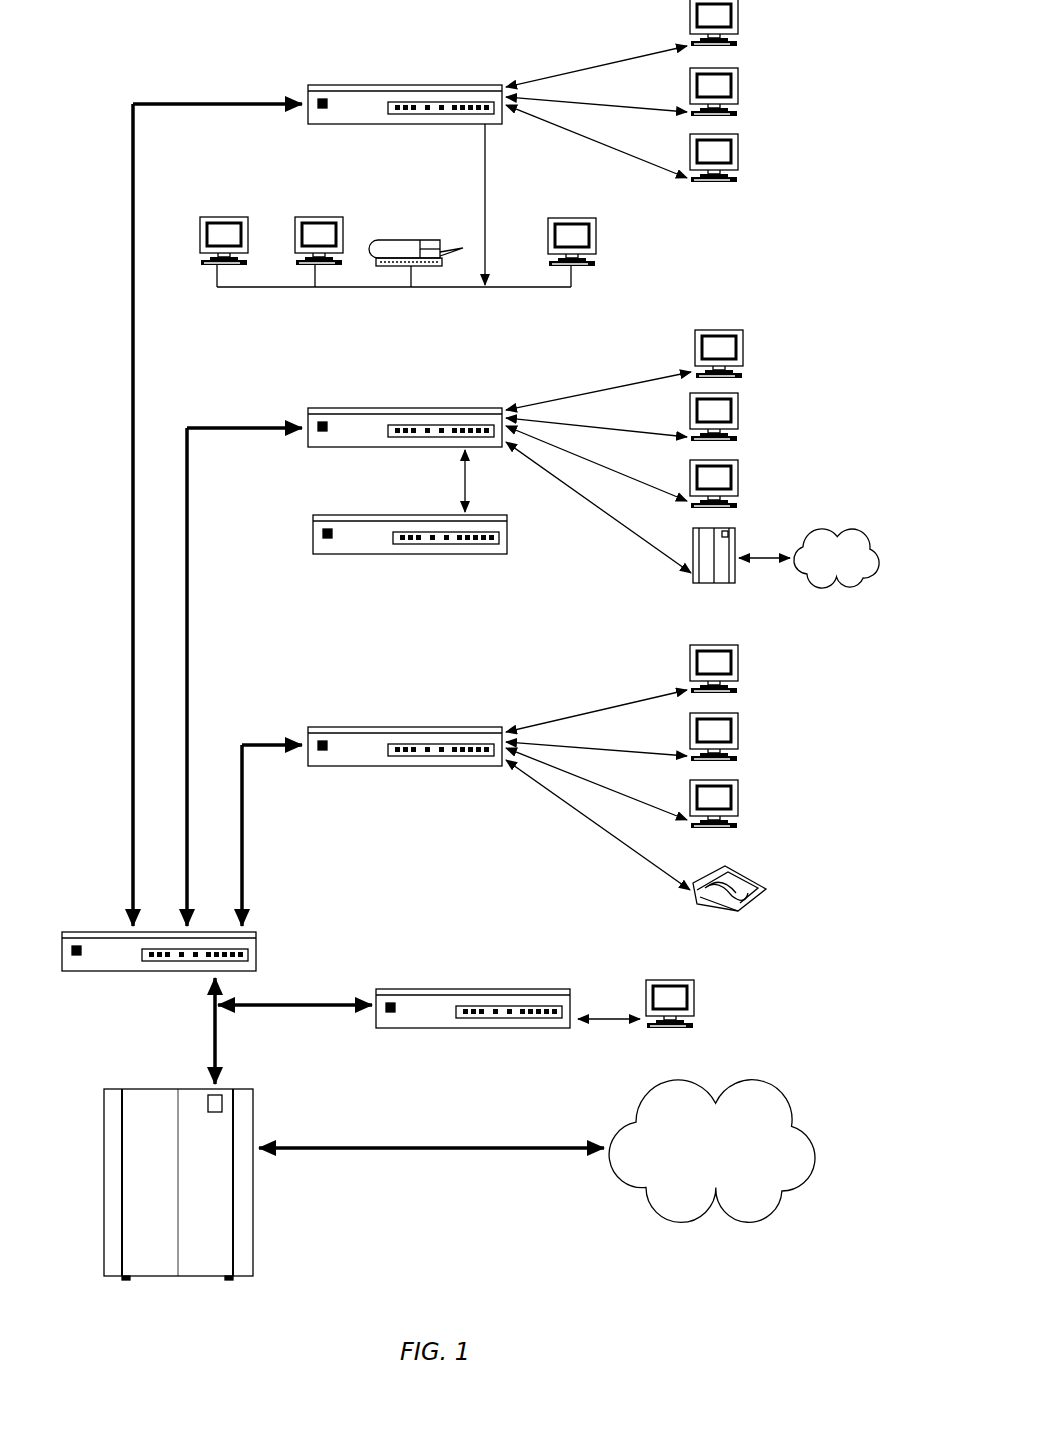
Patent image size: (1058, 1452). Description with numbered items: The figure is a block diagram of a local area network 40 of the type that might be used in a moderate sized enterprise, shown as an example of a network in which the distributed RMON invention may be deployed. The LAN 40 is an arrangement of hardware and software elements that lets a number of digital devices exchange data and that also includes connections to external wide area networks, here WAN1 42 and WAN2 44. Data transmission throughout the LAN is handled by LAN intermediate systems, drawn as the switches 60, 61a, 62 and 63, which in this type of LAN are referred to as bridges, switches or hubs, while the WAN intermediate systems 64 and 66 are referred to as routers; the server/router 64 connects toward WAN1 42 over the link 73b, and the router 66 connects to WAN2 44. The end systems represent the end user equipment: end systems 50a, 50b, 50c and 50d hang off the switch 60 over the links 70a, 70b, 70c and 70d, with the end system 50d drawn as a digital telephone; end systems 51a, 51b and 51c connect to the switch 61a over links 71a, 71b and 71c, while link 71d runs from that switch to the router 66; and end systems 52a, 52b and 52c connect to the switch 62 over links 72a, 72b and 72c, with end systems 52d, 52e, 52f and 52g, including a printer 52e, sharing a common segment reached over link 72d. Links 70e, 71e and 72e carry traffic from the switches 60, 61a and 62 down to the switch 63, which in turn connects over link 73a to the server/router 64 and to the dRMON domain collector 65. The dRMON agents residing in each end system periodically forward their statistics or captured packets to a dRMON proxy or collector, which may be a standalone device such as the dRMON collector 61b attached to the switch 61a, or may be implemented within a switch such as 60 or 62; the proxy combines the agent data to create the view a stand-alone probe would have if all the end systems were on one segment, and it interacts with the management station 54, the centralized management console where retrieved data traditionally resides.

The local area network 40 is at (78, 493).
The wide area network 42 is at (750, 1082).
The wide area network 44 is at (828, 533).
The end system 50a is at (740, 656).
The end system 50b is at (740, 744).
The end system 50c is at (740, 806).
The end system 50d is at (740, 876).
The end system 51a is at (744, 342).
The end system 51b is at (740, 412).
The end system 51c is at (740, 476).
The end system 52a is at (740, 20).
The end system 52b is at (740, 90).
The end system 52c is at (740, 156).
The end system 52d is at (598, 238).
The end system 52e is at (408, 240).
The end system 52f is at (314, 220).
The end system 52g is at (208, 220).
The management station 54 is at (698, 990).
The LAN intermediate system 60 is at (408, 728).
The LAN intermediate system 61a is at (405, 409).
The dRMON proxy 61b is at (410, 516).
The LAN intermediate system 62 is at (406, 86).
The LAN intermediate system 63 is at (108, 932).
The WAN intermediate system 64 is at (104, 1143).
The dRMON domain collector 65 is at (424, 990).
The WAN intermediate system 66 is at (737, 546).
The network link 70a is at (614, 704).
The network link 70b is at (604, 750).
The network link 70c is at (605, 790).
The network link 70d is at (602, 832).
The network link 70e is at (246, 745).
The network link 71a is at (598, 388).
The network link 71b is at (588, 426).
The network link 71c is at (598, 465).
The network link 71d is at (592, 504).
The network link 71e is at (212, 428).
The network link 72a is at (592, 66).
The network link 72b is at (584, 104).
The network link 72c is at (598, 146).
The network link / shared segment 72d is at (487, 184).
The network link 72e is at (212, 104).
The network link 73a is at (220, 1044).
The network link 73b is at (436, 1147).